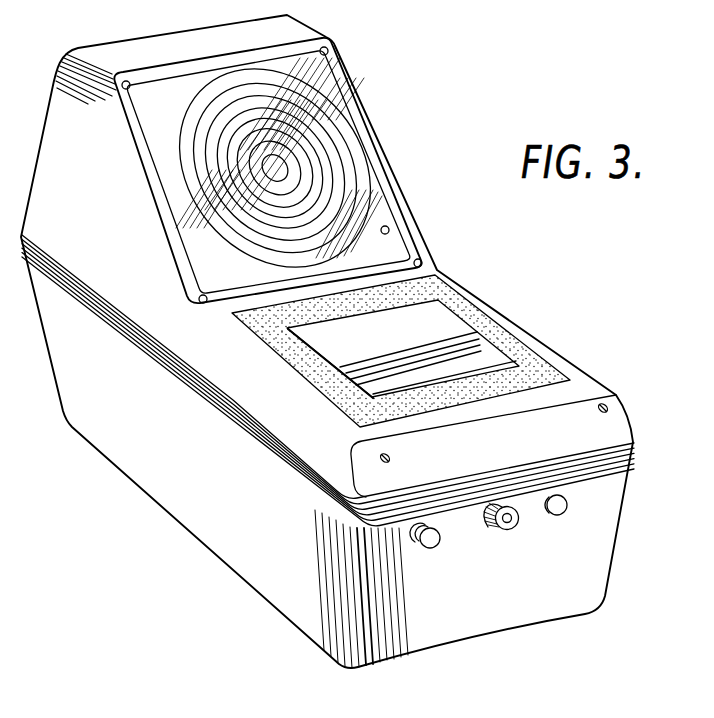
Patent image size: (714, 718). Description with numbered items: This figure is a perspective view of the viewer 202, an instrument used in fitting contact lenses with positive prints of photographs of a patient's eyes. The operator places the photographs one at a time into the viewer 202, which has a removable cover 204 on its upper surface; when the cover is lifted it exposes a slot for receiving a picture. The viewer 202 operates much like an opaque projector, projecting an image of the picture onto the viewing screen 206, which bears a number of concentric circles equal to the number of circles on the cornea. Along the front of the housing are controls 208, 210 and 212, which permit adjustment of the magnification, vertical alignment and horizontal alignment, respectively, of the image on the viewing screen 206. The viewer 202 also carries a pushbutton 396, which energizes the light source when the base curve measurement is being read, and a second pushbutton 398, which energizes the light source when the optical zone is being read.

The viewer 202 is at (240, 603).
The removable cover 204 is at (477, 346).
The viewing screen 206 is at (315, 158).
The control 208 is at (505, 530).
The control 210 is at (423, 550).
The control 212 is at (567, 500).
The pushbutton 396 is at (608, 406).
The second pushbutton 398 is at (352, 461).